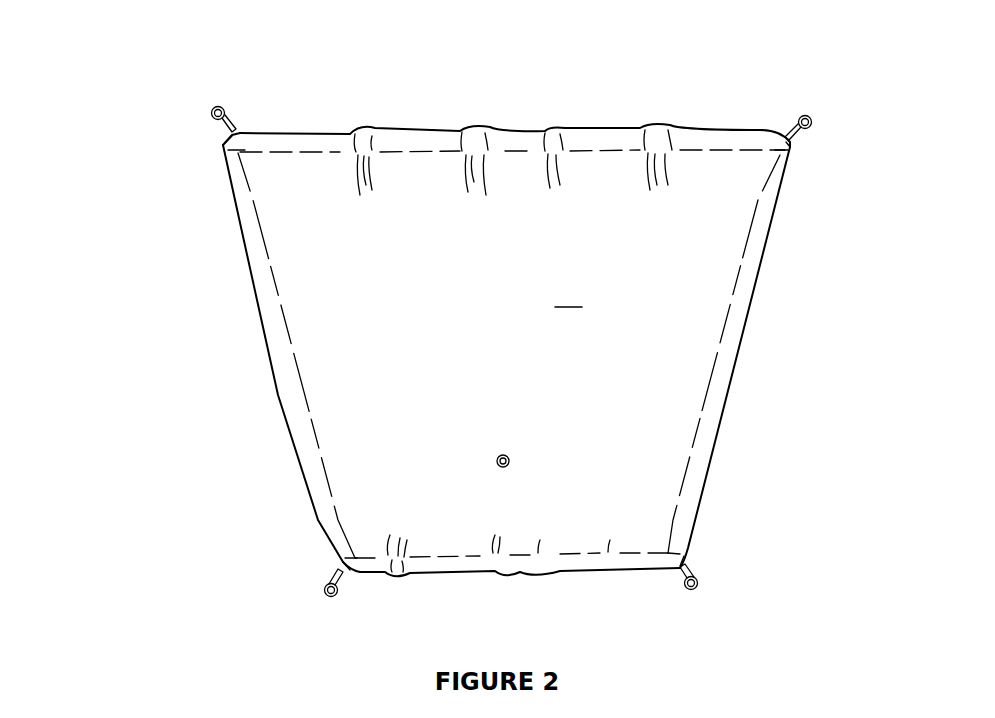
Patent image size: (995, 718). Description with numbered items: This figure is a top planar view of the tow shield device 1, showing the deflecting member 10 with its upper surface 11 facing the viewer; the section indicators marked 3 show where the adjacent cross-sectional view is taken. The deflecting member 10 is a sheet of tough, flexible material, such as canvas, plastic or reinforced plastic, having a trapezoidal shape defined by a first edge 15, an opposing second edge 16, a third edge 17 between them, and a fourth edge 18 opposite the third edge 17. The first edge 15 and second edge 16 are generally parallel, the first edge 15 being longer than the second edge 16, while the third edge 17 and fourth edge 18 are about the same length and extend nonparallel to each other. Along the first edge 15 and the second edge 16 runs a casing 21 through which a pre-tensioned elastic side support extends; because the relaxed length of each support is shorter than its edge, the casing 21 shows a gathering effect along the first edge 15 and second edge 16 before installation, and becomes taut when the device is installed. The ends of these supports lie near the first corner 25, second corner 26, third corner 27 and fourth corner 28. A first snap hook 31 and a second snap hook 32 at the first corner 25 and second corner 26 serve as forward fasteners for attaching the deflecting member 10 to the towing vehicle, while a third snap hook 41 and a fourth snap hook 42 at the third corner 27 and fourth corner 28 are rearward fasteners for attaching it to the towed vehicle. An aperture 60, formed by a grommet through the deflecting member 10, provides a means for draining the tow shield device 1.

The tow shield device 1 is at (128, 330).
The section line for FIG. 3 is at (265, 480).
The deflecting member 10 is at (755, 282).
The upper surface 11 is at (568, 294).
The first edge 15 is at (404, 134).
The second edge 16 is at (450, 573).
The third edge 17 is at (737, 320).
The fourth edge 18 is at (282, 396).
The casing 21 is at (238, 210).
The first corner 25 is at (238, 135).
The second corner 26 is at (790, 148).
The third corner 27 is at (673, 560).
The fourth corner 28 is at (352, 572).
The first snap hook 31 is at (210, 120).
The second snap hook 32 is at (815, 123).
The third snap hook 41 is at (693, 590).
The fourth snap hook 42 is at (326, 588).
The aperture 60 is at (510, 457).